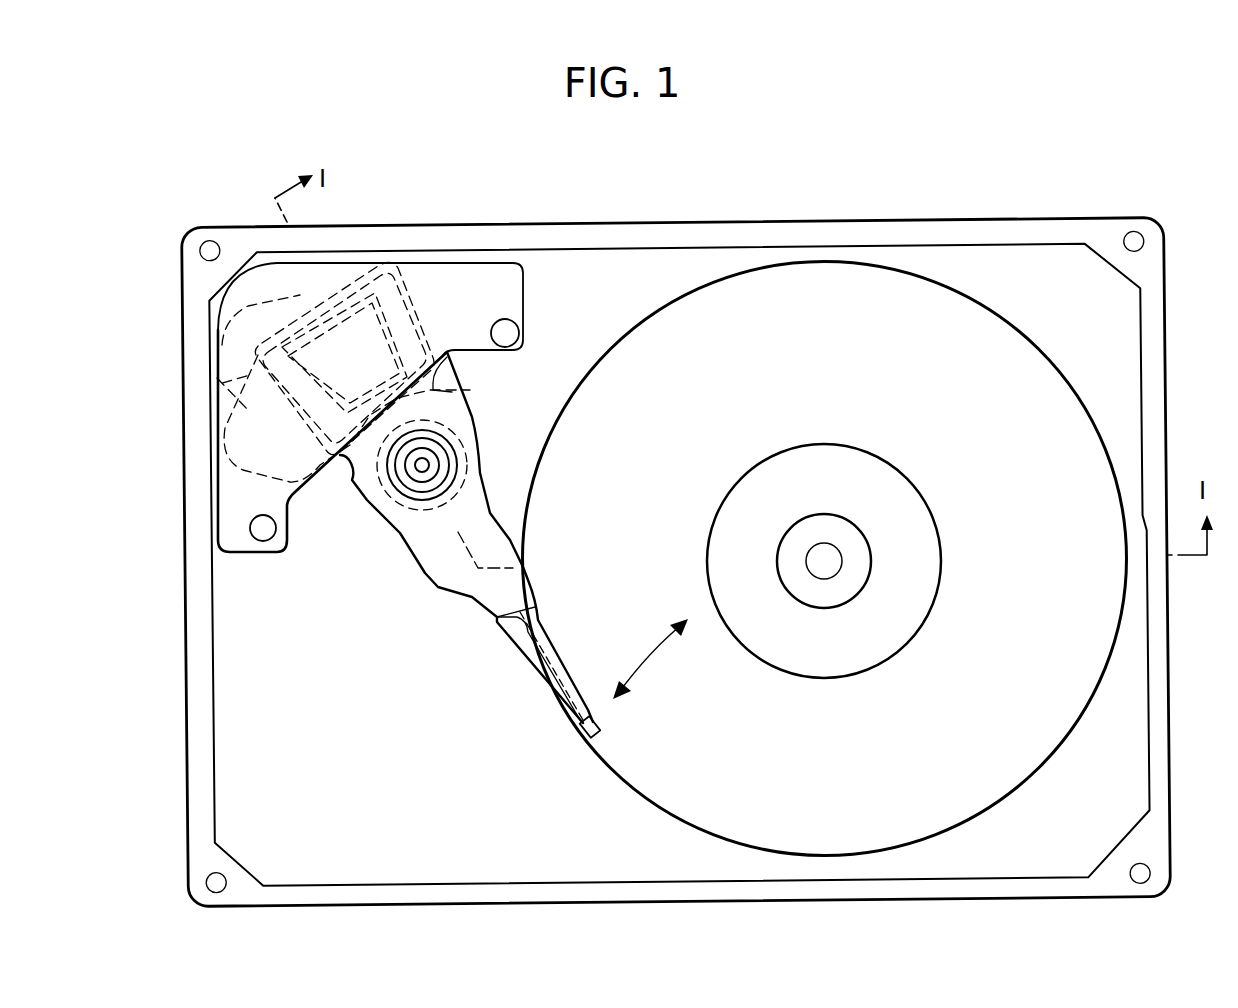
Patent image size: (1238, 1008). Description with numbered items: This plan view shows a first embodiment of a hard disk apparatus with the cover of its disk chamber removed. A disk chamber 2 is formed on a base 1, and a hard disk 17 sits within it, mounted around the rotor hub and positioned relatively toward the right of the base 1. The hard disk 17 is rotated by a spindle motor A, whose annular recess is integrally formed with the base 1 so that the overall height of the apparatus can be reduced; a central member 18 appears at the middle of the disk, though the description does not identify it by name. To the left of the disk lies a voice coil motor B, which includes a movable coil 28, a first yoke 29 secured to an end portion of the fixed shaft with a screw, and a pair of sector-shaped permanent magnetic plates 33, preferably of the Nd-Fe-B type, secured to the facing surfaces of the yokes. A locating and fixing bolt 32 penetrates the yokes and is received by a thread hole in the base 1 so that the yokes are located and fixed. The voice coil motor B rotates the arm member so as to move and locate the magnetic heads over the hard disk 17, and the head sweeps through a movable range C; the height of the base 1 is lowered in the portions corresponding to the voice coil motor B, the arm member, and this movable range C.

The base 1 is at (1172, 735).
The disk chamber 2 is at (1127, 697).
The hard disk 17 is at (1046, 770).
The spindle hub 18 is at (856, 680).
The movable coil 28 is at (307, 293).
The first yoke 29 is at (505, 290).
The locating and fixing bolt 32 is at (507, 333).
The permanent magnetic plates 33 is at (258, 330).
The spindle motor A is at (922, 643).
The voice coil motor B is at (212, 425).
The movable range C is at (640, 747).